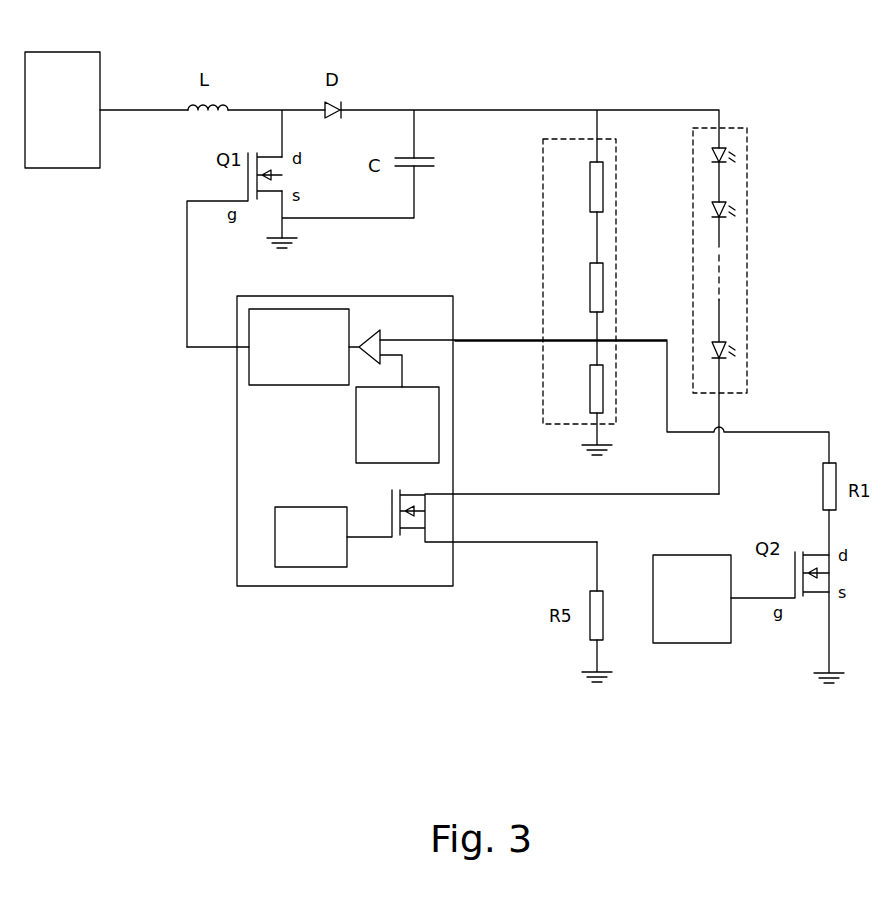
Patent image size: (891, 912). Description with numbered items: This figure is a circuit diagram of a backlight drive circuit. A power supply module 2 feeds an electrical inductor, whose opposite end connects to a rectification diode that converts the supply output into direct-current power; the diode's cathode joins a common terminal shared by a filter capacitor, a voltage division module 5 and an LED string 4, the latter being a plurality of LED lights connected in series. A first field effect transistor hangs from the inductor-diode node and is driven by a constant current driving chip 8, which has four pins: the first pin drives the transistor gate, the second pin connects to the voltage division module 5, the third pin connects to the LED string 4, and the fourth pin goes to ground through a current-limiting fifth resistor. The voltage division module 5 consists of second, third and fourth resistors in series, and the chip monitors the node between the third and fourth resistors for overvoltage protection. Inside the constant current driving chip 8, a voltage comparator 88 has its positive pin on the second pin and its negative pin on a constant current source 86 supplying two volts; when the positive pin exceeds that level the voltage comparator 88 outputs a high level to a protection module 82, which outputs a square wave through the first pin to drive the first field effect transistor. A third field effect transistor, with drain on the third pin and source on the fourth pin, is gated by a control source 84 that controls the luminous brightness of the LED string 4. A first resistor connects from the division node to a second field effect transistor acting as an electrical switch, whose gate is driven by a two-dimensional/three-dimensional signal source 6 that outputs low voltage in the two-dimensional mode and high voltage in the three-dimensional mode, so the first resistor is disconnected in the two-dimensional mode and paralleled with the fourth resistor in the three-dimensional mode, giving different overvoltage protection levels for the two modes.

The power supply module 2 is at (100, 88).
The LED string 4 is at (747, 260).
The voltage division module 5 is at (616, 187).
The 2D/3D signal source 6 is at (693, 643).
The constant current driving chip 8 is at (343, 586).
The protection module 82 is at (249, 385).
The control source 84 is at (275, 535).
The constant current source 86 is at (439, 423).
The voltage comparator 88 is at (380, 335).